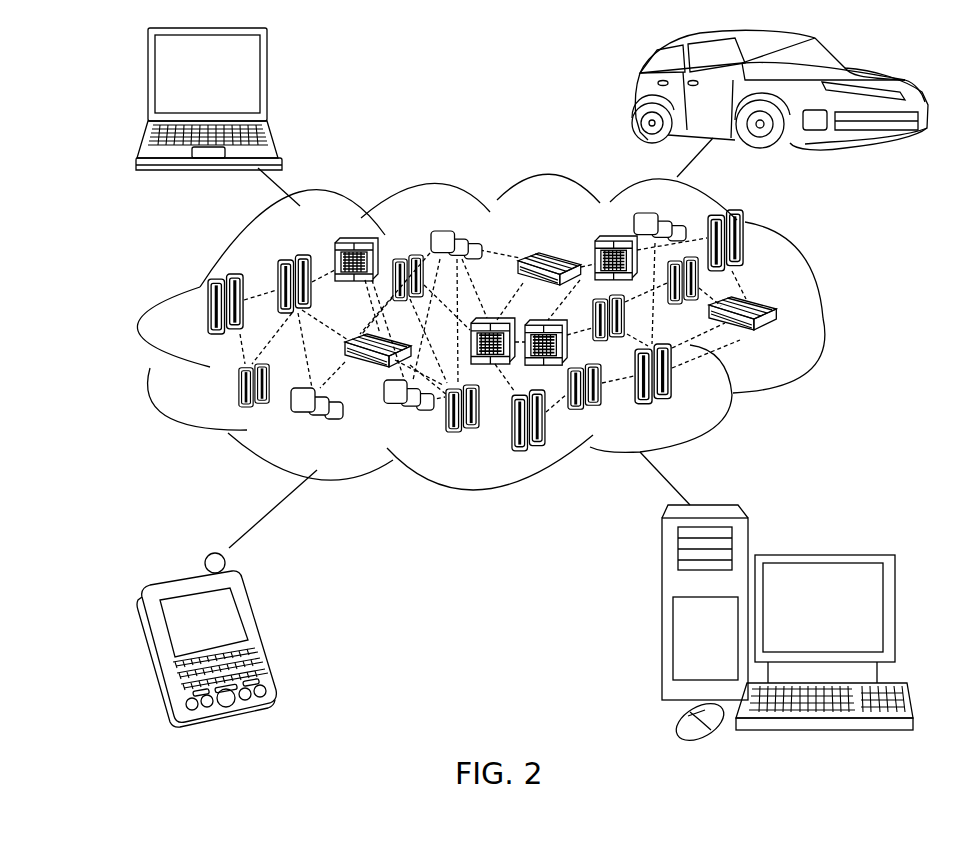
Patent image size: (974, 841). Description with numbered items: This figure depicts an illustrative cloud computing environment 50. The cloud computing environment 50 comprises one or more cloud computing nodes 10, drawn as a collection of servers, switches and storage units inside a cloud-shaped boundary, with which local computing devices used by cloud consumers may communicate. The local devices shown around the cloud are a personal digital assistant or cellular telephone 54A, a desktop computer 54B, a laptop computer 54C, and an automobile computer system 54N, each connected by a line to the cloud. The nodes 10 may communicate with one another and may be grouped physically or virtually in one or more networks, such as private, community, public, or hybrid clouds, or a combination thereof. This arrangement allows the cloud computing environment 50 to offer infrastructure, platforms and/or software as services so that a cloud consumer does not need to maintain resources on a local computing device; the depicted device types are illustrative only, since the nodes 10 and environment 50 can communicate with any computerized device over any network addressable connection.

The cloud computing environment 50 is at (824, 311).
The cloud computing node 10 is at (778, 338).
The personal digital assistant or cellular telephone 54A is at (262, 628).
The desktop computer 54B is at (818, 552).
The laptop computer 54C is at (268, 80).
The automobile computer system 54N is at (635, 95).